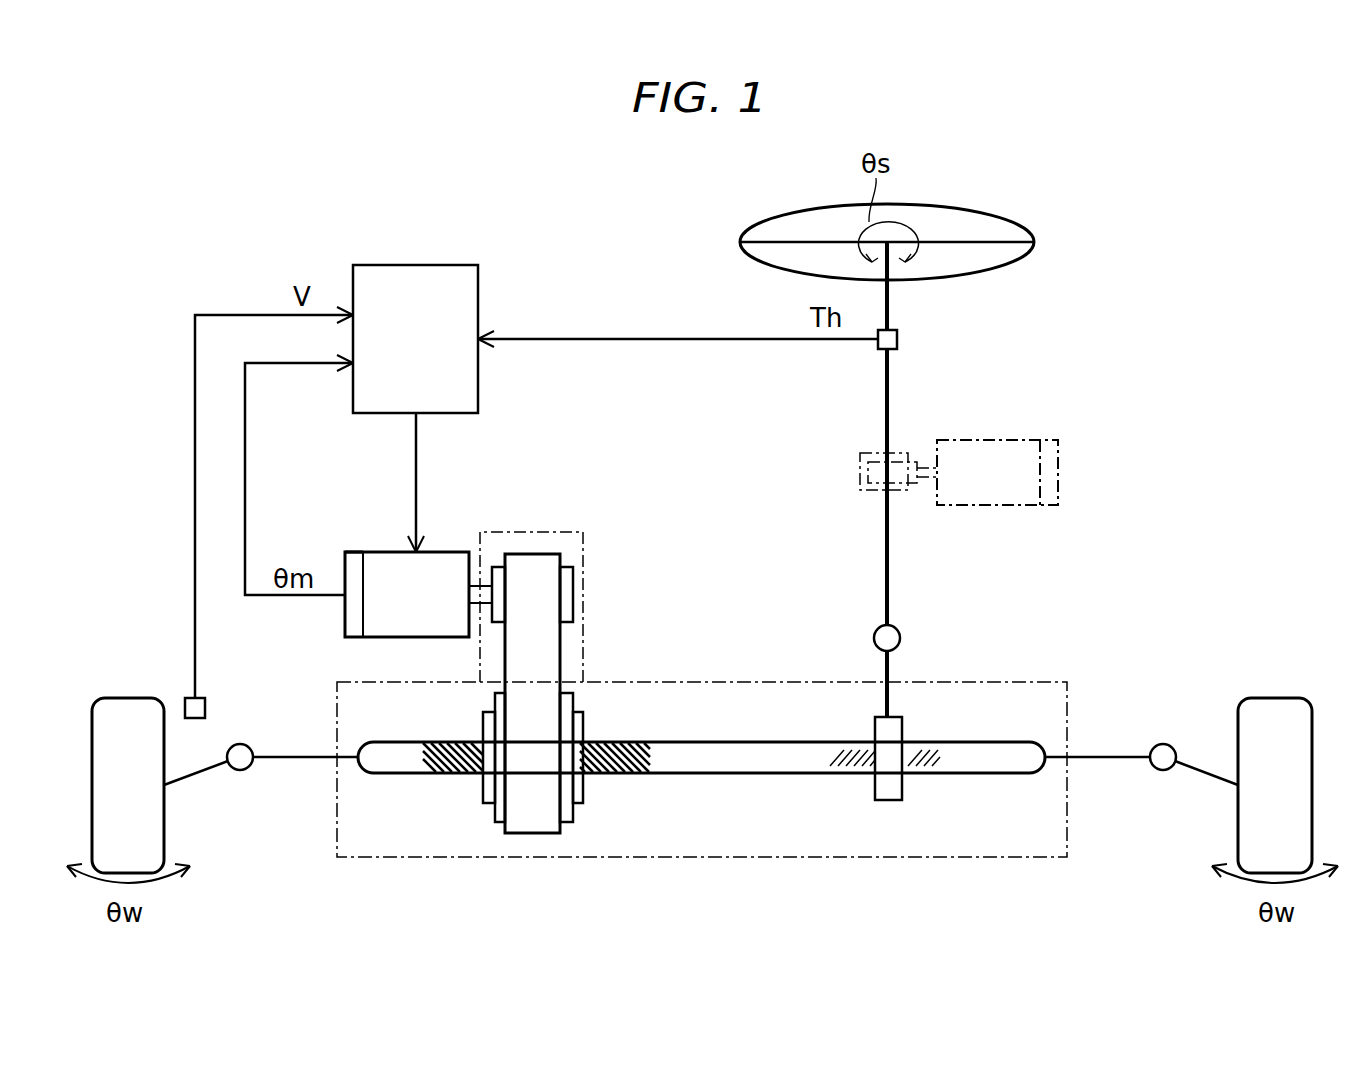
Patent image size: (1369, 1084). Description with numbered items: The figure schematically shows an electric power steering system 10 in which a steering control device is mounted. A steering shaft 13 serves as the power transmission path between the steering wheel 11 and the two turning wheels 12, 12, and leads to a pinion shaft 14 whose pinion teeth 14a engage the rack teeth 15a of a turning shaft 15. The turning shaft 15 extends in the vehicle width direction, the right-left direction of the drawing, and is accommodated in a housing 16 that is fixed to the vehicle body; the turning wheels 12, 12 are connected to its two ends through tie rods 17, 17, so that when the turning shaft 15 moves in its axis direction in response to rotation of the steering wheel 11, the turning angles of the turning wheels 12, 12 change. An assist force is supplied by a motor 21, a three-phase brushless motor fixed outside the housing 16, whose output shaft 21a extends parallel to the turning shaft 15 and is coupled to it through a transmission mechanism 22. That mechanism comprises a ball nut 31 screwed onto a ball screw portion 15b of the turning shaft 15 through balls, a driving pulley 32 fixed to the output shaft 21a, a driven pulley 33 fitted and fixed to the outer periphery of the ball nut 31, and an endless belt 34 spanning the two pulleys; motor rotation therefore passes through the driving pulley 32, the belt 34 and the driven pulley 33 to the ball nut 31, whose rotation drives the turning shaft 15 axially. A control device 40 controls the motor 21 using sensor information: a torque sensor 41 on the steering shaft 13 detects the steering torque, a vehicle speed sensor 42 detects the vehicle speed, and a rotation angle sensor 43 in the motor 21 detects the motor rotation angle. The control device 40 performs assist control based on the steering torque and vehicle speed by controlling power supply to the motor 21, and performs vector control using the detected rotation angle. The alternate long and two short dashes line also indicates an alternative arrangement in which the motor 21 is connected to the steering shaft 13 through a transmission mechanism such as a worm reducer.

The electric power steering system 10 is at (1071, 198).
The steering wheel 11 is at (978, 207).
The turning wheels 12 is at (130, 697).
The steering shaft 13 is at (895, 292).
The pinion shaft 14 is at (885, 697).
The pinion teeth 14a is at (889, 801).
The turning shaft 15 is at (770, 776).
The rack teeth 15a is at (848, 775).
The ball screw portion 15b is at (431, 775).
The housing 16 is at (1005, 682).
The tie rods 17 is at (1113, 768).
The motor 21 is at (1000, 440).
The output shaft 21a is at (478, 584).
The transmission mechanism 22 is at (580, 553).
The ball nut 31 is at (488, 806).
The driving pulley 32 is at (576, 588).
The driven pulley 33 is at (500, 823).
The endless belt 34 is at (566, 645).
The control device 40 is at (457, 265).
The torque sensor 41 is at (900, 340).
The vehicle speed sensor 42 is at (210, 708).
The rotation angle sensor 43 is at (345, 648).